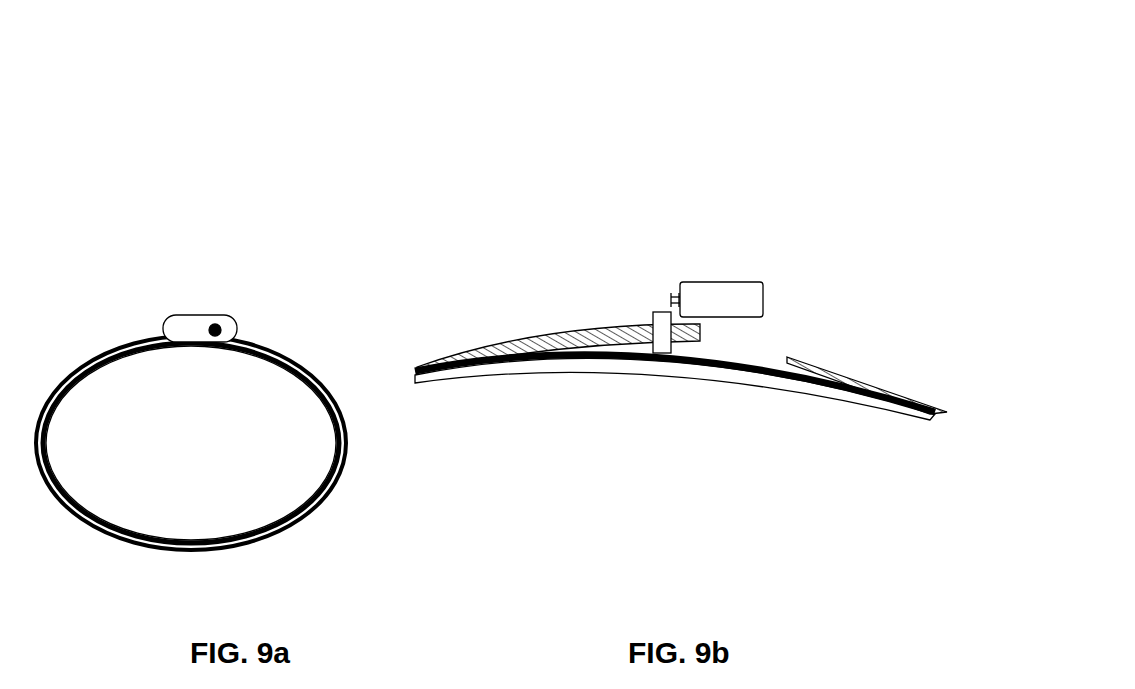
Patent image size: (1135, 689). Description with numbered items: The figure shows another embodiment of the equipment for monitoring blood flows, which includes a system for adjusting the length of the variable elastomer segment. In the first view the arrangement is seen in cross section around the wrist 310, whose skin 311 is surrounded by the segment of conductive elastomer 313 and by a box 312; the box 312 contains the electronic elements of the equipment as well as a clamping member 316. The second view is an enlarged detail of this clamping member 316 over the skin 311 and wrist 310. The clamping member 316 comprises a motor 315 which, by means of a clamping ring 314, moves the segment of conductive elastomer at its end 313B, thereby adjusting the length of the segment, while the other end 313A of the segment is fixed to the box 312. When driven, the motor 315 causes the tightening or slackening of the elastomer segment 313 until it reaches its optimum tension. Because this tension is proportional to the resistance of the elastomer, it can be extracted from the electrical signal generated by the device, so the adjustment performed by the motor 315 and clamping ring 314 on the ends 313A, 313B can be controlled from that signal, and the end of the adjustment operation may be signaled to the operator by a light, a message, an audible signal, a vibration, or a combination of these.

In FIG. 9a, the wrist 310 is at (237, 498).
In FIG. 9b, the wrist 310 is at (692, 380).
In FIG. 9a, the skin 311 is at (90, 357).
In FIG. 9b, the skin 311 is at (462, 369).
In FIG. 9a, the box 312 is at (199, 319).
In FIG. 9a, the segment of conductive elastomer 313 is at (352, 442).
In FIG. 9b, the end of the segment of conductive elastomer 313A is at (812, 360).
In FIG. 9b, the end of the segment of conductive elastomer 313B is at (635, 322).
In FIG. 9b, the clamping ring 314 is at (665, 314).
In FIG. 9b, the motor 315 is at (717, 292).
In FIG. 9a, the clamping member 316 is at (230, 318).
In FIG. 9b, the clamping member 316 is at (814, 168).